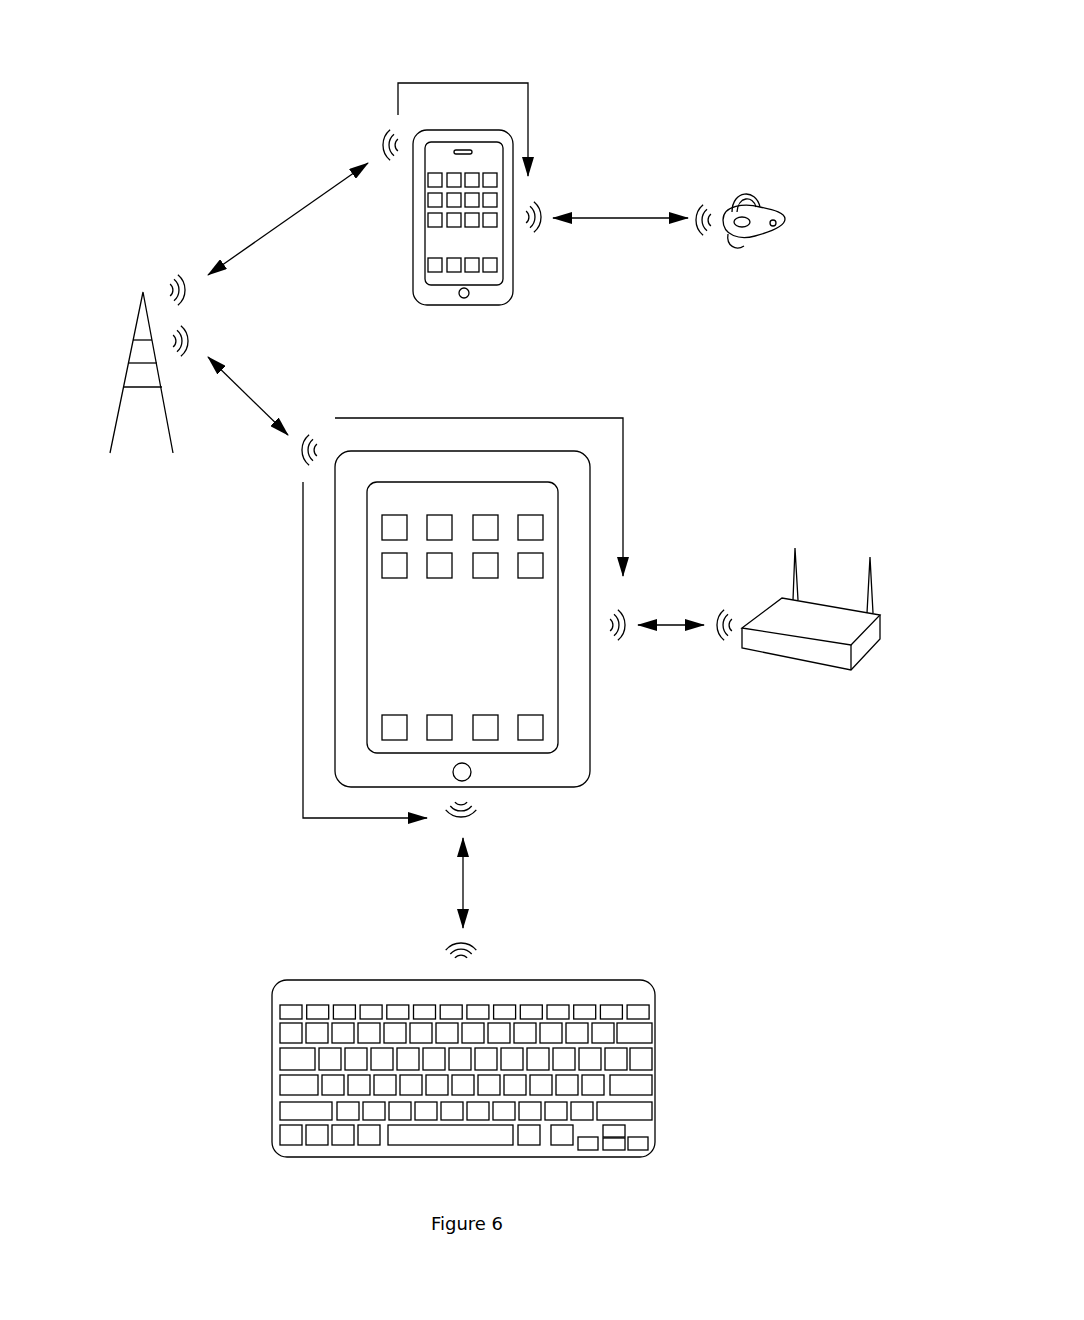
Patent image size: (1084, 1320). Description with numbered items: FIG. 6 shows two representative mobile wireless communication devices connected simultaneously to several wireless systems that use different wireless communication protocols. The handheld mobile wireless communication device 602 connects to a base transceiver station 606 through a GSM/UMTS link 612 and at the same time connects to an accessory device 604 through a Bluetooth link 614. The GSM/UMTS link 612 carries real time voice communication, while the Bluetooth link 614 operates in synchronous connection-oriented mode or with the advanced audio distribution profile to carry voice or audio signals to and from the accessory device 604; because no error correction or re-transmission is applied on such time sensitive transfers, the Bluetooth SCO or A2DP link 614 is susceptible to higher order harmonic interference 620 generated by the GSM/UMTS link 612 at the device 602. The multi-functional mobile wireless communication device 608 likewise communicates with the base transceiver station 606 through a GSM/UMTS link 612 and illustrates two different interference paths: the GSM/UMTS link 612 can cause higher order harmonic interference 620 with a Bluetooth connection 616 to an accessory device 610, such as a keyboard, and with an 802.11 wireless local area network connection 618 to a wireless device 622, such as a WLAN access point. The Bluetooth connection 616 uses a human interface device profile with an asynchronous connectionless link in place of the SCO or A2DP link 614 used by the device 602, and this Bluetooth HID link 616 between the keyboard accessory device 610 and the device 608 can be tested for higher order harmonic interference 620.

The mobile wireless communication device 602 is at (460, 305).
The accessory device 604 is at (785, 218).
The base transceiver station 606 is at (148, 412).
The mobile wireless communication device 608 is at (592, 747).
The accessory device 610 is at (658, 1120).
The GSM/UMTS link 612 is at (248, 388).
The Bluetooth SCO or A2DP link 614 is at (657, 217).
The Bluetooth HID link 616 is at (533, 883).
The 802.11 wireless local area network connection 618 is at (671, 626).
The higher order harmonic interference 620 is at (270, 635).
The wireless device 622 is at (815, 666).